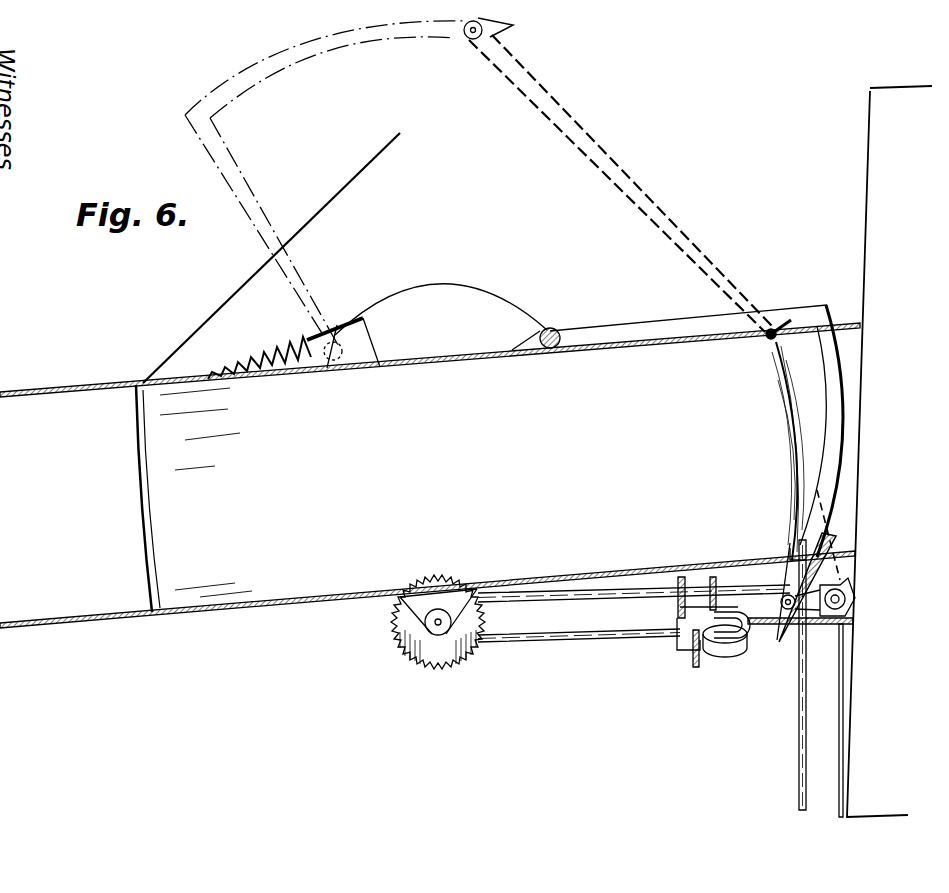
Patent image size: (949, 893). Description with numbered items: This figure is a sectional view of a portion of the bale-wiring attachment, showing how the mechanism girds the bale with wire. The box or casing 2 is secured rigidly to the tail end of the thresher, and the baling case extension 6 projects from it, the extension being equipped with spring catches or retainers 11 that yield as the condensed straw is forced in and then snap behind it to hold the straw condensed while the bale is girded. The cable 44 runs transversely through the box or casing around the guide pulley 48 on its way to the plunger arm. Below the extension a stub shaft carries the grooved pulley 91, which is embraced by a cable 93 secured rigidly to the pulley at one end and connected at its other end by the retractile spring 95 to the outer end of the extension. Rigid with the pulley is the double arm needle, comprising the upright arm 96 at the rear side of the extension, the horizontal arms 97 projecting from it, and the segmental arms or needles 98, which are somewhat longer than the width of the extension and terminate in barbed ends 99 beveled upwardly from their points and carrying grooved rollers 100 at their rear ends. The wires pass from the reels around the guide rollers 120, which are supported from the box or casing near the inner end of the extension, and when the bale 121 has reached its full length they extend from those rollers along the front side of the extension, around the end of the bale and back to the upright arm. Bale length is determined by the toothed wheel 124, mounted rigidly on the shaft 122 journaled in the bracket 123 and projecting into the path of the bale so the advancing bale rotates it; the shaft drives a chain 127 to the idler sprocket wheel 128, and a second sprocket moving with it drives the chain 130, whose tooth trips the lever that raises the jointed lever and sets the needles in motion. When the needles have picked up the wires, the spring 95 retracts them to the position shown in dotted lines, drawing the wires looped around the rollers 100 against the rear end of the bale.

The box or casing 2 is at (866, 237).
The baling case extension 6 is at (48, 392).
The spring catches or retainers 11 is at (769, 339).
The cable 44 is at (696, 658).
The guide pulley 48 is at (729, 658).
The pulley 91 is at (437, 291).
The cable 93 is at (358, 321).
The retractile spring 95 is at (238, 369).
The arm 96 is at (549, 329).
The horizontal arms 97 is at (688, 323).
The segmental arms or needles 98 is at (826, 358).
The barbed ends 99 is at (783, 642).
The grooved rollers 100 is at (781, 604).
The guide rollers 120 is at (852, 606).
The bale 121 is at (470, 477).
The shaft 122 is at (428, 633).
The bracket 123 is at (438, 636).
The toothed wheel 124 is at (410, 620).
The chain 127 is at (568, 644).
The idler sprocket wheel 128 is at (828, 626).
The chain 130 is at (799, 765).